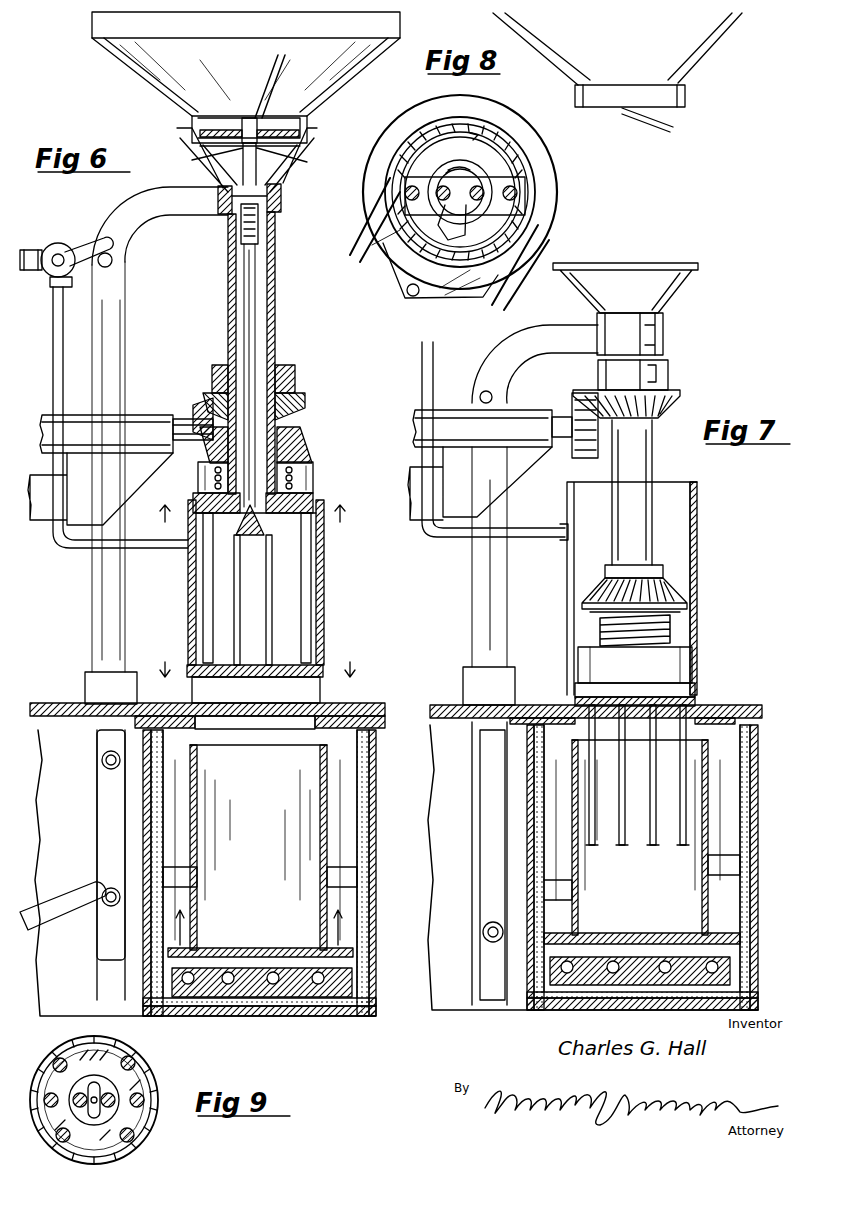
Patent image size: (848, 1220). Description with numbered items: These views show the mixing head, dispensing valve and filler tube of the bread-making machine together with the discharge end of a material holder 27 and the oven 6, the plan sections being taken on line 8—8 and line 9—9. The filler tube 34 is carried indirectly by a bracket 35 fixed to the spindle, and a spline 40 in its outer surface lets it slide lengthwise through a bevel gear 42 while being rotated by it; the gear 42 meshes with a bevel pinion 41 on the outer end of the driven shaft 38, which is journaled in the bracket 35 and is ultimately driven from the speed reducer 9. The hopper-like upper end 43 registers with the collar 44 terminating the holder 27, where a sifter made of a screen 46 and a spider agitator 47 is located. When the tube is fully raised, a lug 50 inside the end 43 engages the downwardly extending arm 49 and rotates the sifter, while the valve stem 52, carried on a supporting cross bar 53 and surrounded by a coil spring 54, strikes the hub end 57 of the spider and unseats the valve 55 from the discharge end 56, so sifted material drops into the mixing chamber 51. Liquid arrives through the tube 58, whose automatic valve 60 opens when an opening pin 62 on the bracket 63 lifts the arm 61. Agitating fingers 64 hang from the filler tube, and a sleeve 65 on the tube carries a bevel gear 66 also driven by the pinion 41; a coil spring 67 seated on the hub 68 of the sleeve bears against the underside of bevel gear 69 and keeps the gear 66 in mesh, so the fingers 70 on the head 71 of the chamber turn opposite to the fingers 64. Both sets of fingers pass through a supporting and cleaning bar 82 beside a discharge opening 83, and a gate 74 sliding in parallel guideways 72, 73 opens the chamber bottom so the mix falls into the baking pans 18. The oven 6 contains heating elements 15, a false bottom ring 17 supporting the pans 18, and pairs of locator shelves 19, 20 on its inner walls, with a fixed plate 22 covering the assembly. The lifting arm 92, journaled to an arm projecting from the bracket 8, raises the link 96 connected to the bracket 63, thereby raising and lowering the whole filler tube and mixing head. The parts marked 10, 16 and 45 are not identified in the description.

In FIG. 6, the insulated oven 6 is at (376, 805).
In FIG. 7, the insulated oven 6 is at (760, 795).
In FIG. 6, the bracket 8 is at (263, 661).
In FIG. 6, the speed reducer 9 is at (254, 524).
In FIG. 8, the frame 10 is at (385, 252).
In FIG. 6, the heating elements 15 is at (230, 998).
In FIG. 7, the heating elements 15 is at (630, 985).
In FIG. 6, the tank inner wall 16 is at (370, 780).
In FIG. 7, the tank inner wall 16 is at (750, 768).
In FIG. 6, the false bottom ring 17 is at (240, 948).
In FIG. 7, the false bottom ring 17 is at (615, 933).
In FIG. 6, the individual baking pans 18 is at (285, 846).
In FIG. 7, the individual baking pans 18 is at (715, 752).
In FIG. 6, the locator shelf 19 is at (357, 880).
In FIG. 7, the locator shelf 19 is at (742, 865).
In FIG. 6, the locator shelf 20 is at (197, 880).
In FIG. 6, the fixed plate 22 is at (368, 706).
In FIG. 7, the fixed plate 22 is at (445, 705).
In FIG. 7, the material holder 27 is at (718, 58).
In FIG. 6, the filler tube 34 is at (276, 265).
In FIG. 7, the filler tube 34 is at (632, 512).
In FIG. 6, the bracket 35 is at (85, 520).
In FIG. 7, the bracket 35 is at (452, 500).
In FIG. 6, the driven shaft 38 is at (188, 440).
In FIG. 6, the spline 40 is at (270, 95).
In FIG. 6, the bevel pinion 41 is at (205, 398).
In FIG. 7, the bevel pinion 41 is at (578, 450).
In FIG. 6, the bevel gear 42 is at (296, 396).
In FIG. 7, the bevel gear 42 is at (685, 400).
In FIG. 6, the hopper-like upper end 43 is at (318, 163).
In FIG. 7, the hopper-like upper end 43 is at (690, 290).
In FIG. 7, the collar 44 is at (686, 100).
In FIG. 6, the collar 45 is at (305, 135).
In FIG. 6, the screen 46 is at (200, 150).
In FIG. 6, the spider agitator 47 is at (230, 128).
In FIG. 6, the arm 49 is at (282, 178).
In FIG. 7, the arm 49 is at (650, 126).
In FIG. 6, the lug 50 is at (305, 152).
In FIG. 6, the mixing chamber 51 is at (298, 590).
In FIG. 8, the mixing chamber 51 is at (518, 224).
In FIG. 7, the mixing chamber 51 is at (678, 528).
In FIG. 9, the mixing chamber 51 is at (140, 1072).
In FIG. 6, the valve stem 52 is at (256, 300).
In FIG. 7, the valve stem 52 is at (632, 268).
In FIG. 9, the valve stem 52 is at (125, 1065).
In FIG. 6, the supporting cross bar 53 is at (260, 240).
In FIG. 6, the coil spring 54 is at (241, 222).
In FIG. 6, the valve 55 is at (266, 530).
In FIG. 6, the discharge end 56 is at (302, 470).
In FIG. 9, the discharge end 56 is at (120, 1120).
In FIG. 6, the hub end 57 is at (235, 165).
In FIG. 6, the tube 58 is at (54, 345).
In FIG. 7, the tube 58 is at (525, 538).
In FIG. 6, the automatic valve 60 is at (52, 245).
In FIG. 6, the arm 61 is at (80, 238).
In FIG. 6, the opening pin 62 is at (112, 262).
In FIG. 6, the bracket 63 is at (126, 318).
In FIG. 7, the bracket 63 is at (495, 612).
In FIG. 6, the agitating fingers 64 is at (250, 540).
In FIG. 8, the agitating fingers 64 is at (455, 238).
In FIG. 7, the agitating fingers 64 is at (650, 790).
In FIG. 9, the agitating fingers 64 is at (60, 1128).
In FIG. 6, the sleeve 65 is at (306, 428).
In FIG. 6, the bevel gear 66 is at (305, 450).
In FIG. 7, the bevel gear 66 is at (680, 593).
In FIG. 6, the coil spring 67 is at (215, 480).
In FIG. 7, the coil spring 67 is at (672, 630).
In FIG. 7, the hub 68 is at (695, 660).
In FIG. 7, the bevel gear 69 is at (686, 612).
In FIG. 6, the agitating fingers 70 is at (203, 605).
In FIG. 8, the agitating fingers 70 is at (518, 190).
In FIG. 7, the agitating fingers 70 is at (680, 848).
In FIG. 9, the agitating fingers 70 is at (57, 1068).
In FIG. 6, the head 71 is at (316, 492).
In FIG. 7, the head 71 is at (700, 680).
In FIG. 9, the head 71 is at (150, 1090).
In FIG. 8, the guideway 72 is at (360, 222).
In FIG. 8, the guideway 73 is at (508, 292).
In FIG. 6, the gate 74 is at (283, 728).
In FIG. 8, the gate 74 is at (445, 296).
In FIG. 6, the supporting and cleaning bar 82 is at (300, 665).
In FIG. 8, the supporting and cleaning bar 82 is at (500, 183).
In FIG. 7, the supporting and cleaning bar 82 is at (600, 700).
In FIG. 8, the discharge opening 83 is at (488, 160).
In FIG. 6, the lifting arm 92 is at (80, 930).
In FIG. 6, the link 96 is at (110, 808).
In FIG. 7, the link 96 is at (490, 968).